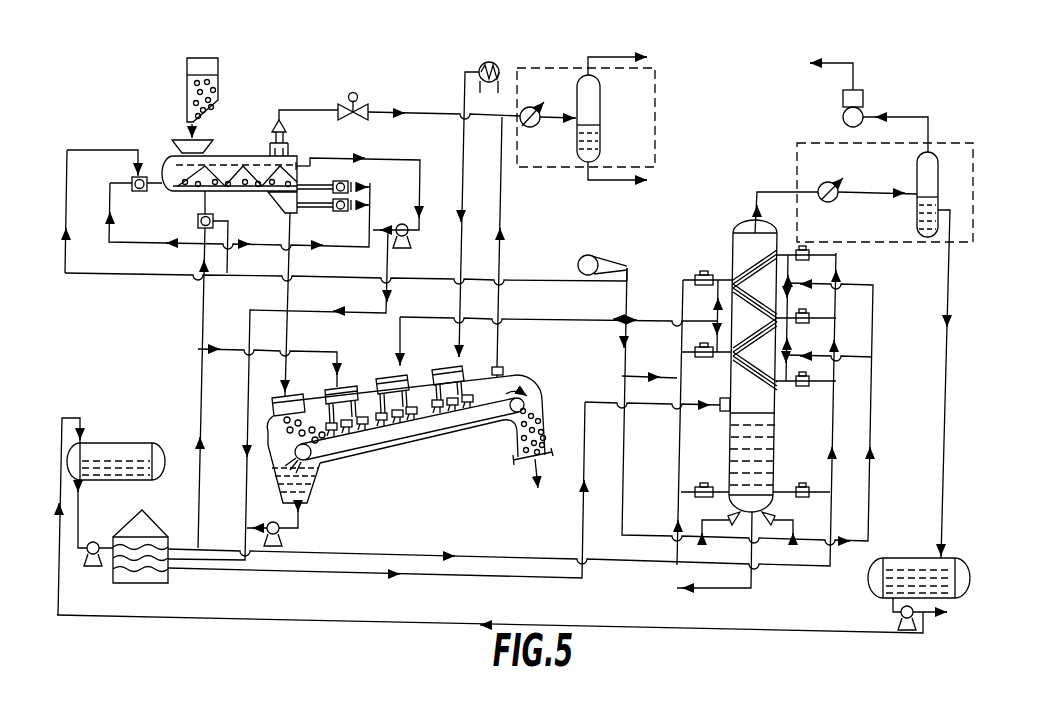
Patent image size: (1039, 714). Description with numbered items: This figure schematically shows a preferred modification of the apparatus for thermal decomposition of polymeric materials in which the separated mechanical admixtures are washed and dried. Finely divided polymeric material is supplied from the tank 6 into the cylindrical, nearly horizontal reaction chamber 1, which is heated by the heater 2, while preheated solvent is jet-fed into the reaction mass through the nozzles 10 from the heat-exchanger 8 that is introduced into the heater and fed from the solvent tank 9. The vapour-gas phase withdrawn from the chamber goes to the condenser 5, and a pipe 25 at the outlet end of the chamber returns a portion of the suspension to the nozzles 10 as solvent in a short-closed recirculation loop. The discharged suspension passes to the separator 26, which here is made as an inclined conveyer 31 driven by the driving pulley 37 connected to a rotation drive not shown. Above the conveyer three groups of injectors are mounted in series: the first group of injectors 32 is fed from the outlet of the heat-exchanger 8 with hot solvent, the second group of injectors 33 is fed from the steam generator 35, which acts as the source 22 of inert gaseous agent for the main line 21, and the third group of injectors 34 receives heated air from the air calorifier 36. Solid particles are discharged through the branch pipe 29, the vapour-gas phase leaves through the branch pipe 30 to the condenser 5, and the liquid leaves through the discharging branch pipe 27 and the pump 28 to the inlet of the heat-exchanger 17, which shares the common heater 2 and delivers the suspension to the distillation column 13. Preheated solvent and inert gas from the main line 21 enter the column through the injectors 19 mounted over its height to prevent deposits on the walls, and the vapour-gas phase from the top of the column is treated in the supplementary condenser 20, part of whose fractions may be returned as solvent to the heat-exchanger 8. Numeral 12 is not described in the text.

The reaction chamber 1 is at (164, 156).
The heater 2 is at (133, 520).
The condenser 5 is at (657, 101).
The tank 6 is at (187, 90).
The heat-exchanger 8 is at (164, 535).
The tank 9 is at (117, 447).
The nozzles 10 is at (326, 198).
The pump 12 is at (94, 541).
The distillation column 13 is at (746, 222).
The heat-exchanger 17 is at (146, 576).
The injectors 19 is at (703, 272).
The supplementary condenser 20 is at (976, 191).
The main line 21 is at (520, 278).
The source of the inert gaseous agent 22 is at (586, 255).
The pipe 25 is at (302, 164).
The separator 26 is at (417, 446).
The discharging branch pipe 27 is at (308, 481).
The pump 28 is at (272, 522).
The branch pipe 29 is at (543, 423).
The branch pipe 30 is at (505, 371).
The inclined conveyer 31 is at (482, 428).
The first group of injectors 32 is at (345, 386).
The second group of injectors 33 is at (405, 377).
The third group of injectors 34 is at (463, 368).
The steam generator 35 is at (598, 262).
The air calorifier 36 is at (489, 62).
The driving pulley 37 is at (538, 385).